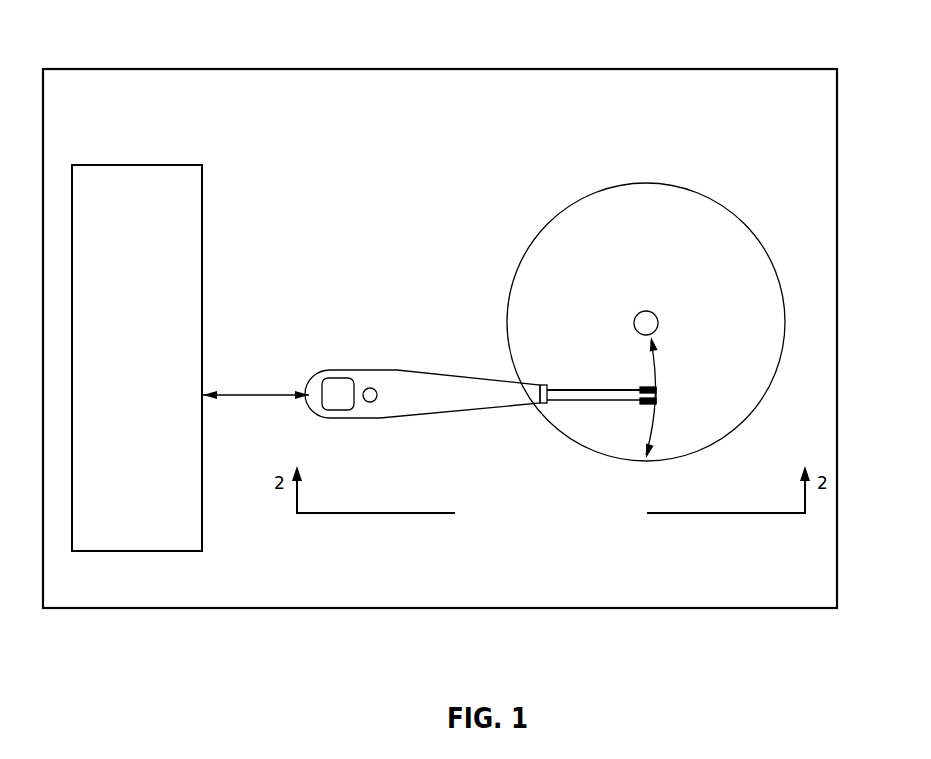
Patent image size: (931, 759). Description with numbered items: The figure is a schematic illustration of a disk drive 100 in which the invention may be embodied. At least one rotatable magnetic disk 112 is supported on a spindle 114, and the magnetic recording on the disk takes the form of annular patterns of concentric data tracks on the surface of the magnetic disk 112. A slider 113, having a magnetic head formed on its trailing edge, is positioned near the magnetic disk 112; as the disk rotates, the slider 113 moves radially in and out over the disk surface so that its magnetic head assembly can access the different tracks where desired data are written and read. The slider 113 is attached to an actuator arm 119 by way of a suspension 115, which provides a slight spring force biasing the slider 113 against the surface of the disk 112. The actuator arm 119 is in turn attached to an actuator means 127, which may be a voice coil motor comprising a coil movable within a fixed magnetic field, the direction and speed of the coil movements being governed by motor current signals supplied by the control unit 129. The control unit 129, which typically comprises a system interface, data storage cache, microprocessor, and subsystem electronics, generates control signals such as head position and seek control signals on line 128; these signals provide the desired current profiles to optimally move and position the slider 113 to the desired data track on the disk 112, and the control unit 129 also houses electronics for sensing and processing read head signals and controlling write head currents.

The disk drive 100 is at (341, 64).
The magnetic disk 112 is at (713, 199).
The slider 113 is at (645, 388).
The spindle 114 is at (659, 325).
The suspension 115 is at (622, 399).
The actuator arm 119 is at (417, 402).
The actuator means 127 is at (336, 383).
The line 128 is at (230, 392).
The control unit 129 is at (78, 185).